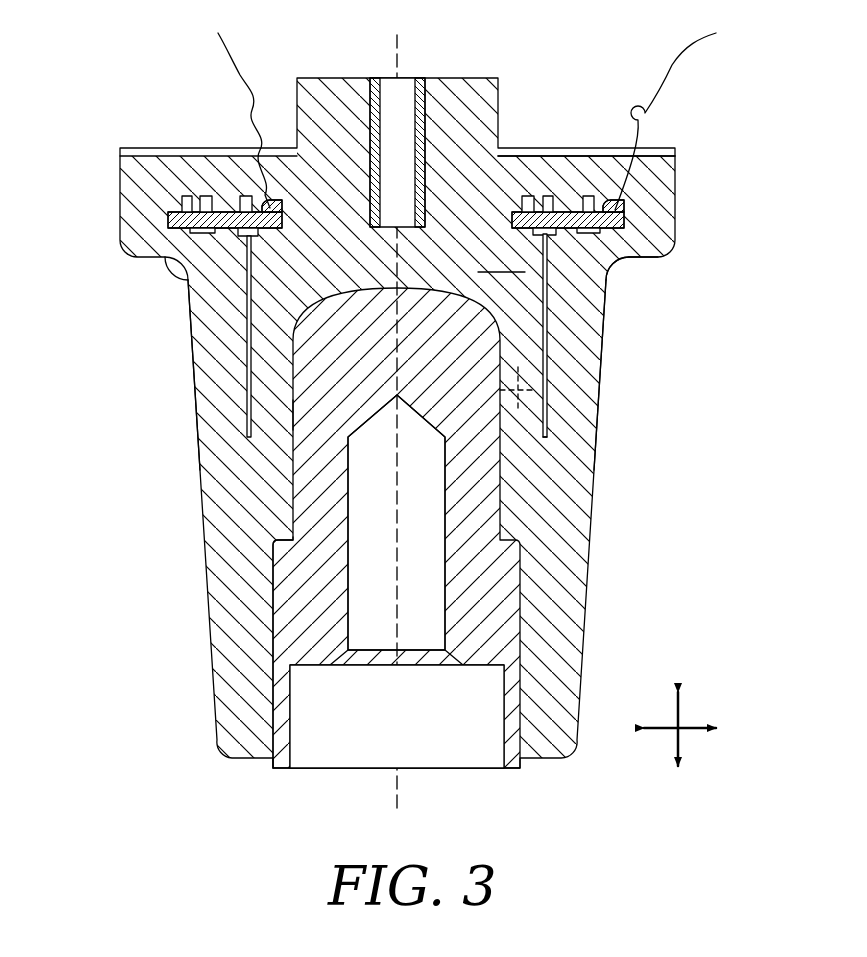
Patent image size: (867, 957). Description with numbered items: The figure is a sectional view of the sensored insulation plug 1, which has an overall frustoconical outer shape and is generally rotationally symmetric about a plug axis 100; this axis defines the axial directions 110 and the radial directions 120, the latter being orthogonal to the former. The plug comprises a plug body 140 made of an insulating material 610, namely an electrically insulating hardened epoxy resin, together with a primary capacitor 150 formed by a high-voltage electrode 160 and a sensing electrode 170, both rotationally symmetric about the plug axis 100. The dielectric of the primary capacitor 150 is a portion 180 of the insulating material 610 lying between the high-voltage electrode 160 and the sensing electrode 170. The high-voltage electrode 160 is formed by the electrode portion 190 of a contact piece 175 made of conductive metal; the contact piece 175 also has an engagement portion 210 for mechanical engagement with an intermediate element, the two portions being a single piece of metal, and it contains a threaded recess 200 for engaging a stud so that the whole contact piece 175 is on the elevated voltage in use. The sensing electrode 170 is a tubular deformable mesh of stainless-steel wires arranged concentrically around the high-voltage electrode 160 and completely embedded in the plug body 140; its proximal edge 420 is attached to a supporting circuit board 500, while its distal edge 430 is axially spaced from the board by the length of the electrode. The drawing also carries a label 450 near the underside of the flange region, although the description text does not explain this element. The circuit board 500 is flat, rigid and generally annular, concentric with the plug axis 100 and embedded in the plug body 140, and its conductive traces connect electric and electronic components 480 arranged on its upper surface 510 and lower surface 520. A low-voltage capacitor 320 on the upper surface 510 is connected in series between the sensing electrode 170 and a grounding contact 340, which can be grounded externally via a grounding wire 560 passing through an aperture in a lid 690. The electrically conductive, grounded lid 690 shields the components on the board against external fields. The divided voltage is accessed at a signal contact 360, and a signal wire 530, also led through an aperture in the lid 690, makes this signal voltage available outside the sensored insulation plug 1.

The sensored insulation plug 1 is at (100, 70).
The plug axis 100 is at (400, 62).
The axial directions 110 is at (683, 703).
The radial directions 120 is at (697, 727).
The plug body 140 is at (504, 258).
The primary capacitor 150 is at (524, 368).
The high-voltage electrode 160 is at (292, 345).
The sensing electrode 170 is at (247, 293).
The contact piece 175 is at (285, 643).
The portion of the insulating material 180 is at (532, 410).
The electrode portion 190 is at (283, 400).
The threaded recess 200 is at (397, 603).
The engagement portion 210 is at (265, 707).
The low-voltage capacitor 320 is at (247, 207).
The grounding contact 340 is at (625, 205).
The signal contact 360 is at (263, 203).
The proximal edge 420 is at (585, 272).
The distal edge 430 is at (547, 433).
The flange underside 450 is at (630, 256).
The electric and electronic components 480 is at (586, 197).
The circuit board 500 is at (172, 222).
The upper surface 510 is at (175, 210).
The lower surface 520 is at (183, 252).
The signal wire 530 is at (218, 44).
The grounding wire 560 is at (672, 65).
The insulating material 610 is at (558, 580).
The lid 690 is at (517, 152).